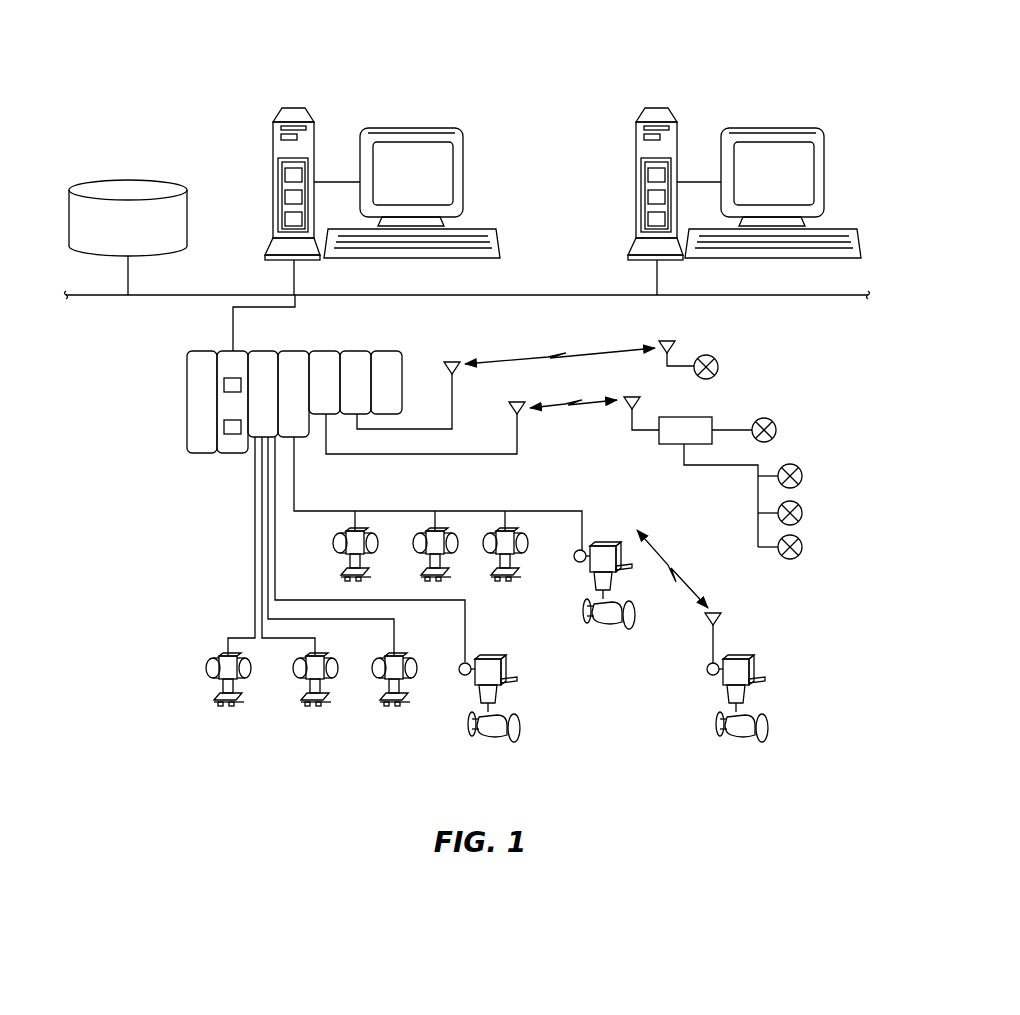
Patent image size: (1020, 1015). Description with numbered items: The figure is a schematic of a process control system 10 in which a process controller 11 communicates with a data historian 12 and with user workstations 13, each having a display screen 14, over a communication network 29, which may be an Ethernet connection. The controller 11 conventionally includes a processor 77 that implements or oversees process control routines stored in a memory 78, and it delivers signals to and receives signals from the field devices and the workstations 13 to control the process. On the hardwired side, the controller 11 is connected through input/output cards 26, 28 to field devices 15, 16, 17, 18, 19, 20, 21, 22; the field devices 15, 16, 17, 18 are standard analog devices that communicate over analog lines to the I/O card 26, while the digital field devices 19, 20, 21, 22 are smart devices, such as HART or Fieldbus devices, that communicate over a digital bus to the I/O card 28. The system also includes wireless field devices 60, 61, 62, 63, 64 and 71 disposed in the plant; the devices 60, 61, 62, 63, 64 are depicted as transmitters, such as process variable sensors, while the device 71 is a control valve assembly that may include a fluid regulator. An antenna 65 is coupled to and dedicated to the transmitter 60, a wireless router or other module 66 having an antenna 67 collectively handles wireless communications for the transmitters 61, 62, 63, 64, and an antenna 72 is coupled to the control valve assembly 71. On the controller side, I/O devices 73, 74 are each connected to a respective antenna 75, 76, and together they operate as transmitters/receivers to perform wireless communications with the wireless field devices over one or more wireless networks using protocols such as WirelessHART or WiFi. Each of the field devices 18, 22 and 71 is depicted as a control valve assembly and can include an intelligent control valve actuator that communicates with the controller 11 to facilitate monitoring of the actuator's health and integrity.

The process control system 10 is at (586, 76).
The process controller 11 is at (274, 374).
The data historian 12 is at (190, 217).
The user workstation 13 is at (273, 144).
The display screen 14 is at (463, 166).
The field device 15 is at (226, 692).
The field device 16 is at (311, 692).
The field device 17 is at (391, 692).
The field device 18 is at (483, 686).
The digital field device 19 is at (363, 528).
The digital field device 20 is at (443, 528).
The digital field device 21 is at (513, 528).
The digital field device 22 is at (604, 540).
The input/output card 26 is at (263, 363).
The input/output card 28 is at (292, 360).
The communication network 29 is at (165, 297).
The wireless field device 60 is at (719, 367).
The wireless field device 61 is at (777, 430).
The wireless field device 62 is at (803, 475).
The wireless field device 63 is at (803, 512).
The wireless field device 64 is at (803, 546).
The antenna 65 is at (676, 344).
The wireless router module 66 is at (668, 447).
The antenna 67 is at (641, 408).
The control valve assembly 71 is at (733, 686).
The antenna 72 is at (722, 620).
The I/O device 73 is at (326, 360).
The I/O device 74 is at (360, 360).
The antenna 75 is at (517, 436).
The antenna 76 is at (453, 391).
The processor 77 is at (224, 384).
The memory 78 is at (224, 427).